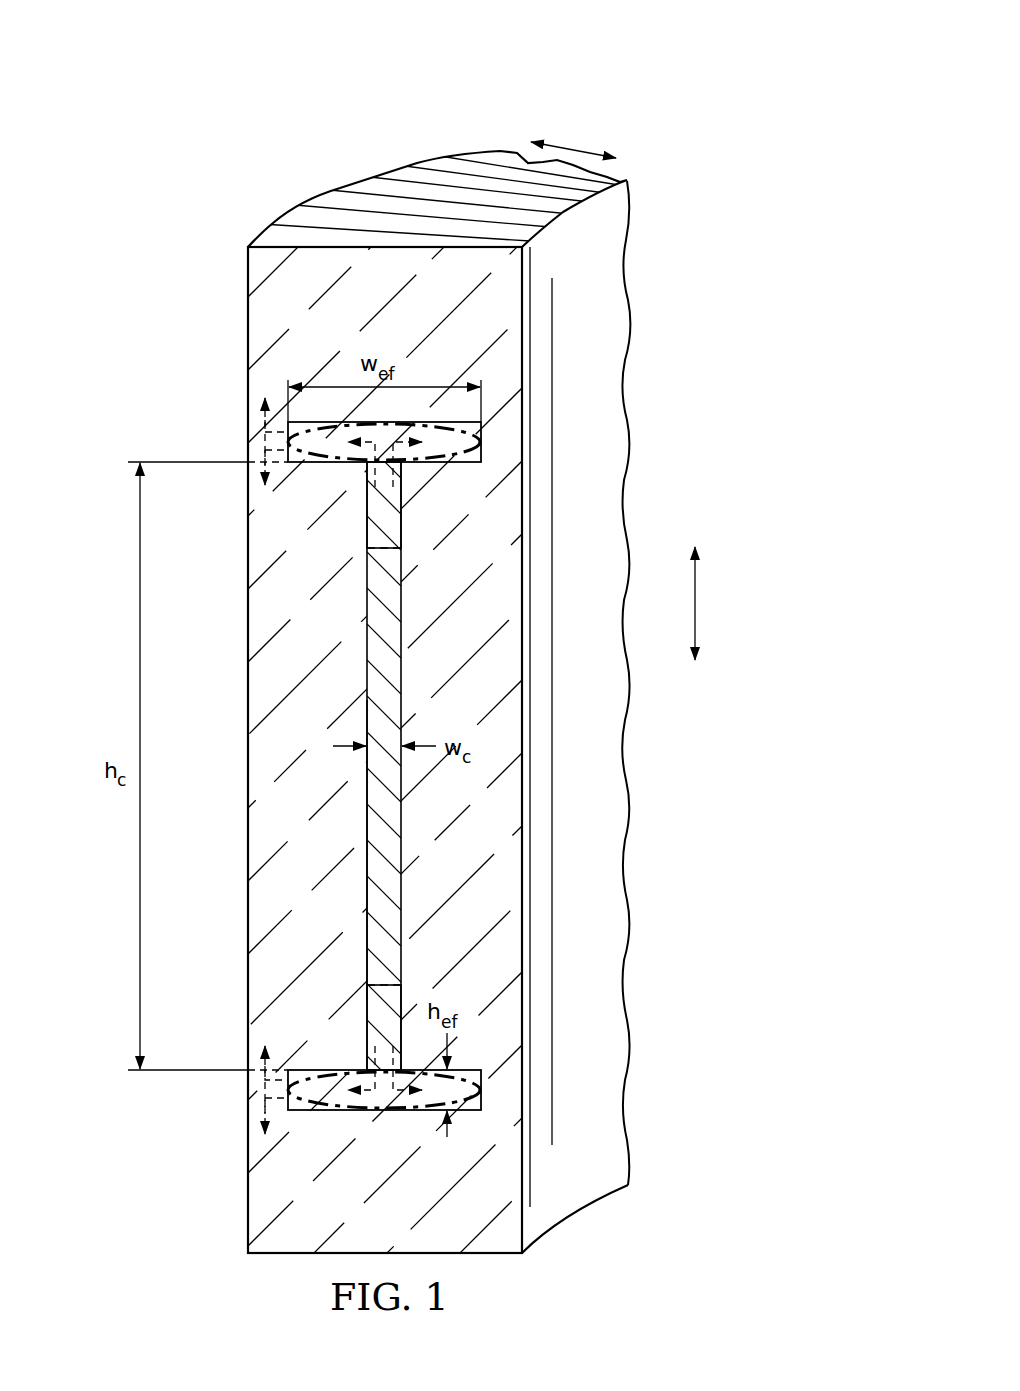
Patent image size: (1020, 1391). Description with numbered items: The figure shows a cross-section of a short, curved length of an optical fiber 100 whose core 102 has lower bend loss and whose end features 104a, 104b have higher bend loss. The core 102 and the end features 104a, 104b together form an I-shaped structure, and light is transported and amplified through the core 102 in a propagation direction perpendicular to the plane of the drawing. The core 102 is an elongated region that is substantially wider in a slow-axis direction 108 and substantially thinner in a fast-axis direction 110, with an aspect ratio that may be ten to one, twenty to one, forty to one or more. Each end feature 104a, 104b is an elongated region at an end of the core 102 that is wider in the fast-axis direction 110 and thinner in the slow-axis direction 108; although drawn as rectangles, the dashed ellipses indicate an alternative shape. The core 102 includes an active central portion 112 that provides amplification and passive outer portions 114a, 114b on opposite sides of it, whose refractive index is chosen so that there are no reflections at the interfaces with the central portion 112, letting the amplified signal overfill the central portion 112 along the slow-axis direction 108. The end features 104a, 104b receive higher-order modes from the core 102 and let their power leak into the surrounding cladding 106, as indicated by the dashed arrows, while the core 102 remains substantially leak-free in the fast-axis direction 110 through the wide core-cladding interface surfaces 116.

The optical fiber 100 is at (636, 68).
The core 102 is at (364, 676).
The end feature 104a is at (434, 448).
The end feature 104b is at (400, 1104).
The cladding 106 is at (256, 331).
The slow-axis direction 108 is at (695, 602).
The fast-axis direction 110 is at (574, 148).
The central portion 112 is at (367, 905).
The outer portion 114a is at (364, 535).
The outer portion 114b is at (364, 1038).
The core-cladding interface surfaces 116 is at (367, 830).